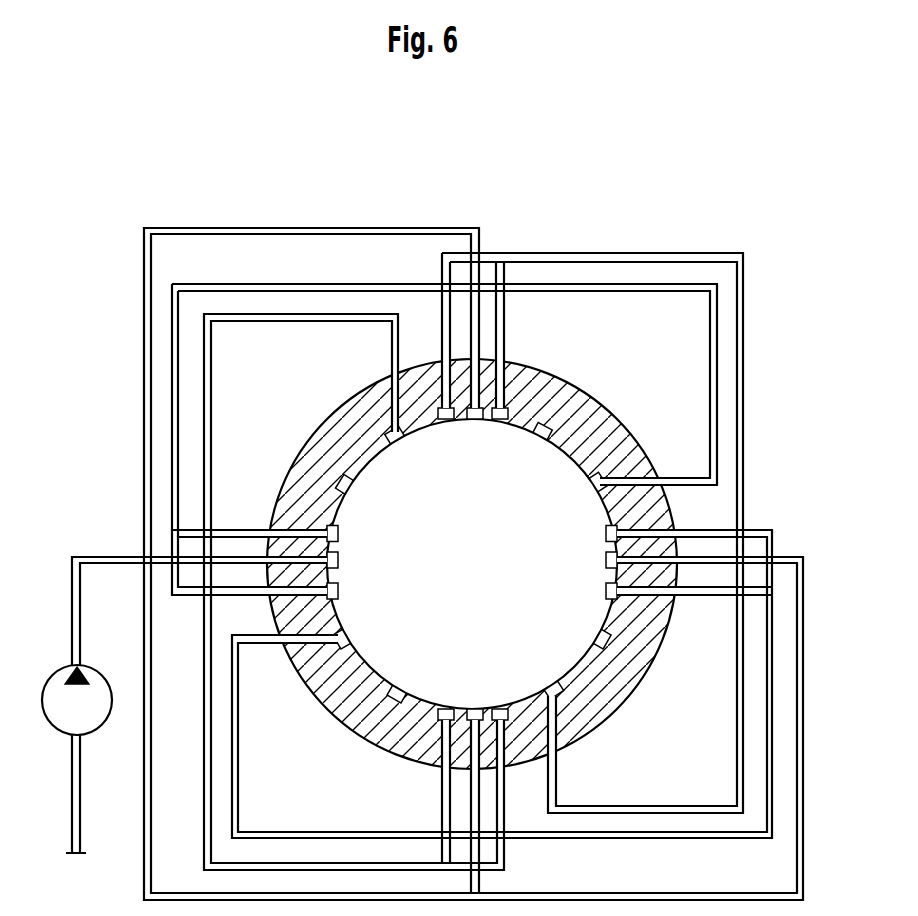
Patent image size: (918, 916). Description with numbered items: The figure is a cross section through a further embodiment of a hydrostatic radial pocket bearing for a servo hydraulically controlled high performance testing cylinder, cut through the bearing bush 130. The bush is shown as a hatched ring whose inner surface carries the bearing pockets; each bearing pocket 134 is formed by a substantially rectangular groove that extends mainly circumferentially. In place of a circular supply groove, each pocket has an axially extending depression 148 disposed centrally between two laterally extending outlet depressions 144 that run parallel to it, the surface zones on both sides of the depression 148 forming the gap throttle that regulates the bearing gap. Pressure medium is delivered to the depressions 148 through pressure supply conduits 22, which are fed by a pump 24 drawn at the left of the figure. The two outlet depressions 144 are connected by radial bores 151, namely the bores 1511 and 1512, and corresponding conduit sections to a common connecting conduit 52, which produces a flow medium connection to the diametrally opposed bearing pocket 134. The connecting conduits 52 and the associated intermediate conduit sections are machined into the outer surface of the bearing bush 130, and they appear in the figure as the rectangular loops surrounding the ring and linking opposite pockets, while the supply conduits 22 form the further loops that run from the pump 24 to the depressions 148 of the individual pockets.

The pressure supply conduit 22 is at (295, 236).
The pump 24 is at (102, 728).
The connecting conduit 52 is at (745, 458).
The bearing bush 130 is at (345, 722).
The bearing pocket 134 is at (538, 432).
The outlet depression 144 is at (442, 418).
The axially extending depression 148 is at (472, 418).
The radial bore 151 is at (486, 330).
The radial bore 1511 is at (500, 383).
The radial bore 1512 is at (443, 383).